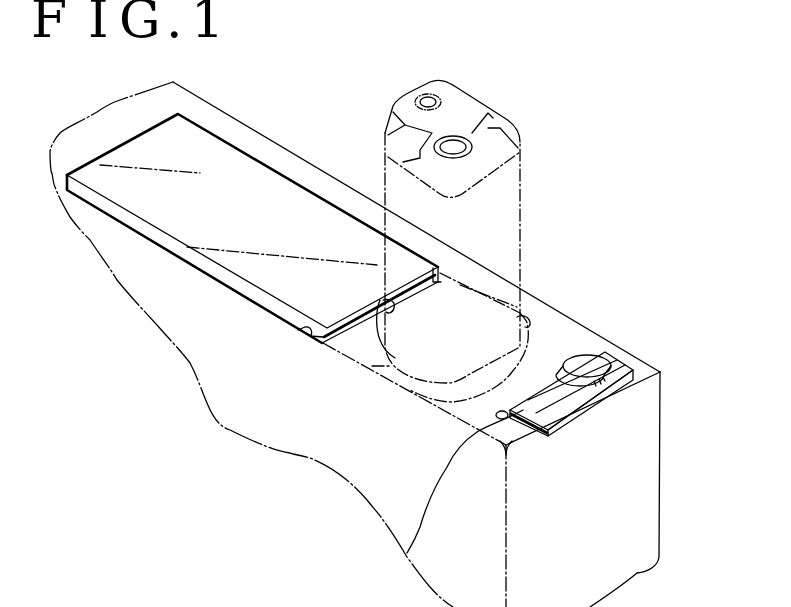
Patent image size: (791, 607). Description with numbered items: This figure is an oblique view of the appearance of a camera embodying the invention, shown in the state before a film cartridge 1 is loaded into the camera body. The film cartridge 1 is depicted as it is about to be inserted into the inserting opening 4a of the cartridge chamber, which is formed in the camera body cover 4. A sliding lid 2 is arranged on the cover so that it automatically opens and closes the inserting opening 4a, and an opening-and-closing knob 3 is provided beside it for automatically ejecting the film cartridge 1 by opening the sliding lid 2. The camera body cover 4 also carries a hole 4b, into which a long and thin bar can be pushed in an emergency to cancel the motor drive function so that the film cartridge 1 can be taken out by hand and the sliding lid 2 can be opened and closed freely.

The film cartridge 1 is at (520, 212).
The sliding lid 2 is at (253, 177).
The opening-and-closing knob 3 is at (615, 365).
The camera body cover 4 is at (659, 470).
The inserting opening 4a is at (560, 317).
The hole 4b is at (407, 553).